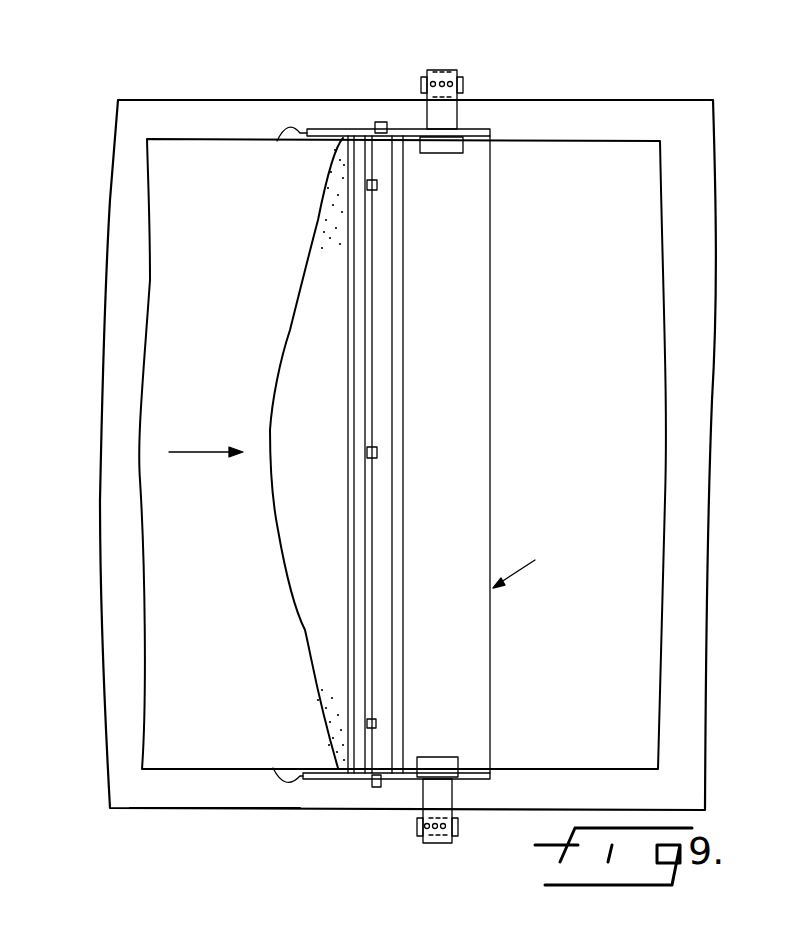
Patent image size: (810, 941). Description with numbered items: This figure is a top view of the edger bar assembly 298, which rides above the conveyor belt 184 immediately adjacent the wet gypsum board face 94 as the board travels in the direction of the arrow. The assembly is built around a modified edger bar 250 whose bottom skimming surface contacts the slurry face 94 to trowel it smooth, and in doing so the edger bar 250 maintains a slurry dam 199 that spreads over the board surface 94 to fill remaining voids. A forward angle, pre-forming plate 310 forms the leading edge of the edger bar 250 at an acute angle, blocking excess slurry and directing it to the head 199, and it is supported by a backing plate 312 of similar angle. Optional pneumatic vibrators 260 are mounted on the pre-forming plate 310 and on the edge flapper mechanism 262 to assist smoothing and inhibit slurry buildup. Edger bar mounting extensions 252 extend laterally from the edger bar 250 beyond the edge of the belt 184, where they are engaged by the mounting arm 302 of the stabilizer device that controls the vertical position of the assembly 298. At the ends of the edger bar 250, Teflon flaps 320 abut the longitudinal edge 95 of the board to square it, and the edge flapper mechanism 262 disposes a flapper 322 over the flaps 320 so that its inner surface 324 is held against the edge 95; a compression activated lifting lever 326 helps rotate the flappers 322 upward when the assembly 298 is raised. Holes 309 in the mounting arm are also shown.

The board face 94 is at (160, 555).
The longitudinal edge 95 is at (204, 138).
The conveyor belt 184 is at (240, 800).
The slurry dam 199 is at (290, 357).
The edger bar 250 is at (480, 358).
The edger bar mounting extensions 252 is at (443, 70).
The pneumatic vibrators 260 is at (378, 133).
The edge flapper mechanism 262 is at (345, 110).
The edger bar assembly 298 is at (545, 562).
The mounting arm 302 is at (421, 83).
The hole 309 is at (475, 66).
The forward angle pre-forming plate 310 is at (350, 685).
The backing plate 312 is at (383, 547).
The Teflon flaps 320 is at (330, 129).
The flapper 322 is at (280, 140).
The inner surface 324 is at (342, 140).
The compression activated lifting lever 326 is at (450, 150).